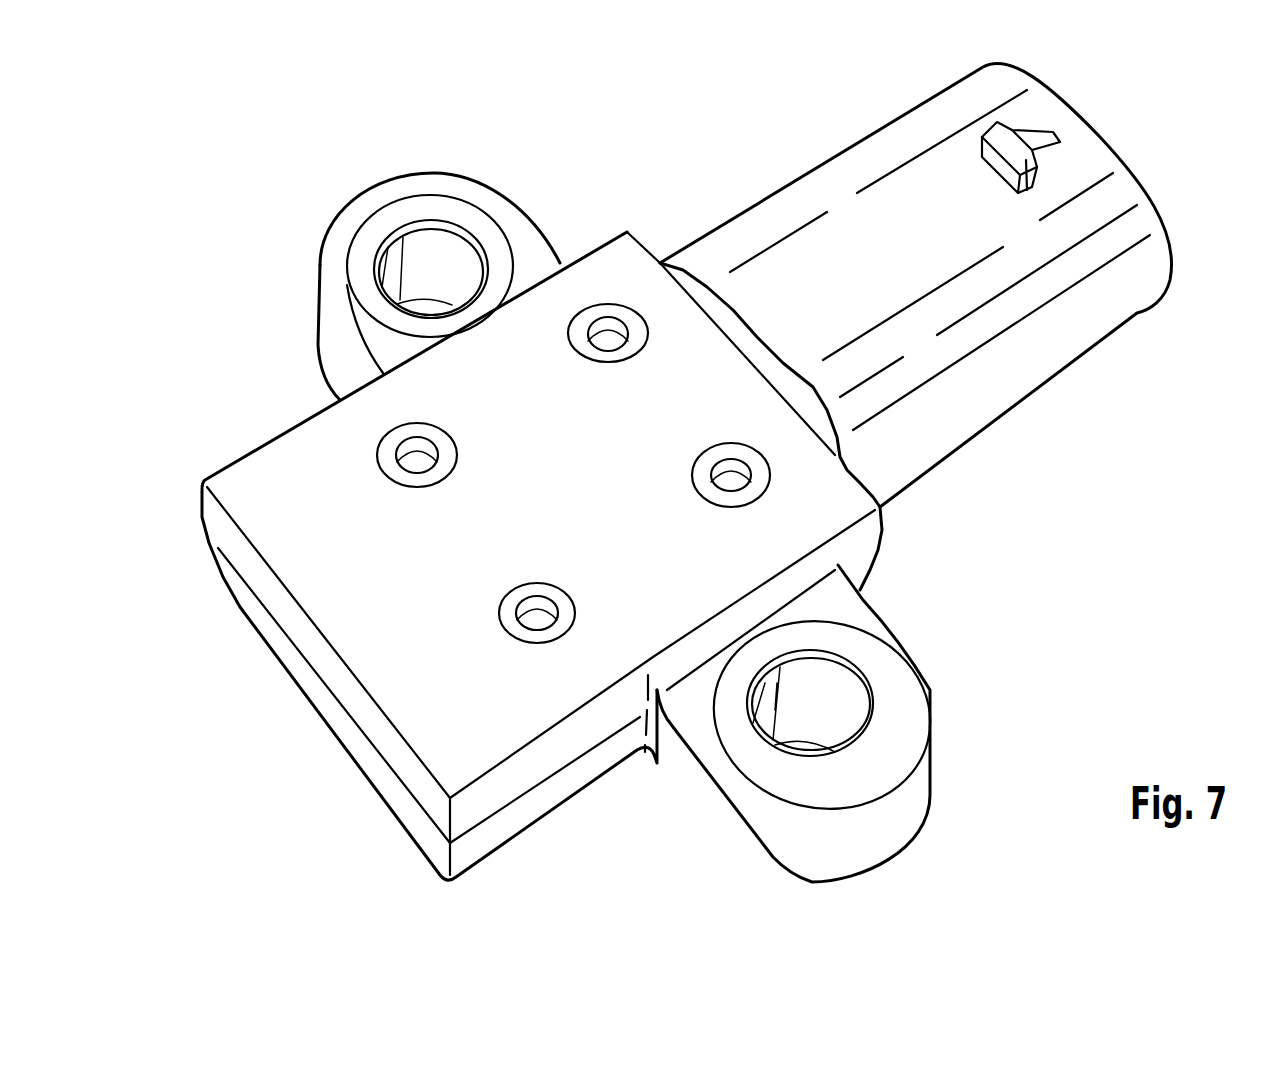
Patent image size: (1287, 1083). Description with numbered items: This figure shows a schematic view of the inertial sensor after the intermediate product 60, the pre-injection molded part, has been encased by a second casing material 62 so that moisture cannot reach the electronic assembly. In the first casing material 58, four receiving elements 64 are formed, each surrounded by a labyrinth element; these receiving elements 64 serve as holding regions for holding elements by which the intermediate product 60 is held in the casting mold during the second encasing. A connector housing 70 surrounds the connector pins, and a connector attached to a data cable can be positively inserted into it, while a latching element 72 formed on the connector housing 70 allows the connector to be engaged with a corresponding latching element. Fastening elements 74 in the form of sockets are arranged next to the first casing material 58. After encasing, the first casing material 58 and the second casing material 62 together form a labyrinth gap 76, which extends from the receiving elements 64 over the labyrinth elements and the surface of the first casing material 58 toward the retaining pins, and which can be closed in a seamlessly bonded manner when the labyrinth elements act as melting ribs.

The first casing material 58 is at (713, 247).
The intermediate product 60 is at (262, 164).
The second casing material 62 is at (243, 482).
The receiving elements 64 is at (608, 328).
The connector housing 70 is at (827, 187).
The latching element 72 is at (1000, 123).
The fastening elements 74 is at (455, 213).
The labyrinth gap 76 is at (632, 306).